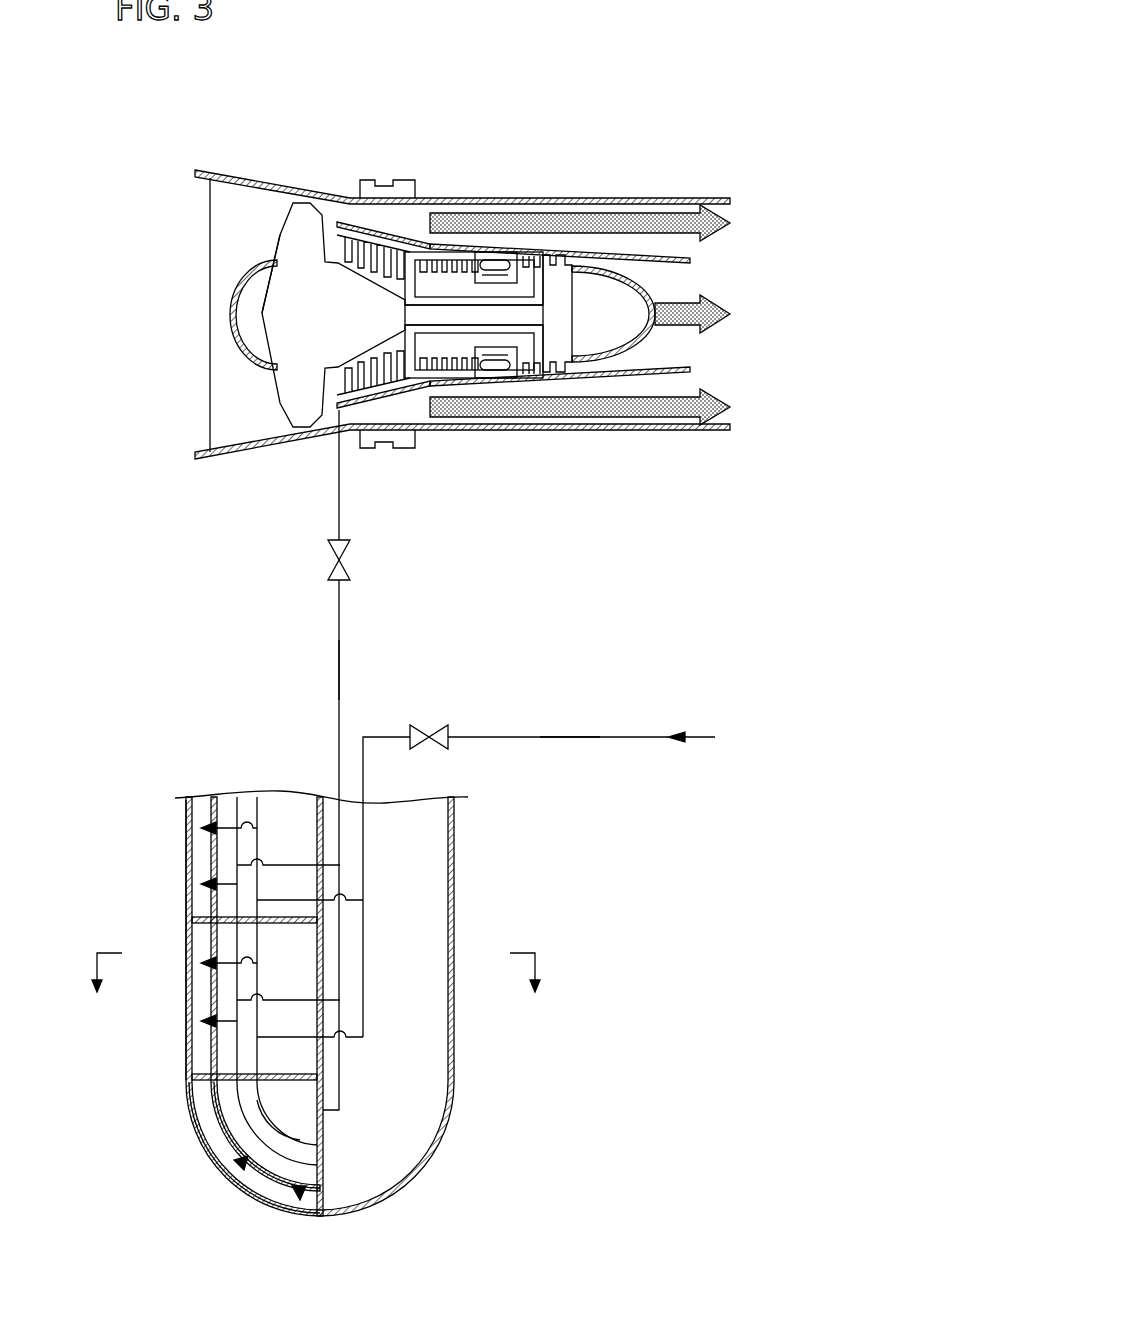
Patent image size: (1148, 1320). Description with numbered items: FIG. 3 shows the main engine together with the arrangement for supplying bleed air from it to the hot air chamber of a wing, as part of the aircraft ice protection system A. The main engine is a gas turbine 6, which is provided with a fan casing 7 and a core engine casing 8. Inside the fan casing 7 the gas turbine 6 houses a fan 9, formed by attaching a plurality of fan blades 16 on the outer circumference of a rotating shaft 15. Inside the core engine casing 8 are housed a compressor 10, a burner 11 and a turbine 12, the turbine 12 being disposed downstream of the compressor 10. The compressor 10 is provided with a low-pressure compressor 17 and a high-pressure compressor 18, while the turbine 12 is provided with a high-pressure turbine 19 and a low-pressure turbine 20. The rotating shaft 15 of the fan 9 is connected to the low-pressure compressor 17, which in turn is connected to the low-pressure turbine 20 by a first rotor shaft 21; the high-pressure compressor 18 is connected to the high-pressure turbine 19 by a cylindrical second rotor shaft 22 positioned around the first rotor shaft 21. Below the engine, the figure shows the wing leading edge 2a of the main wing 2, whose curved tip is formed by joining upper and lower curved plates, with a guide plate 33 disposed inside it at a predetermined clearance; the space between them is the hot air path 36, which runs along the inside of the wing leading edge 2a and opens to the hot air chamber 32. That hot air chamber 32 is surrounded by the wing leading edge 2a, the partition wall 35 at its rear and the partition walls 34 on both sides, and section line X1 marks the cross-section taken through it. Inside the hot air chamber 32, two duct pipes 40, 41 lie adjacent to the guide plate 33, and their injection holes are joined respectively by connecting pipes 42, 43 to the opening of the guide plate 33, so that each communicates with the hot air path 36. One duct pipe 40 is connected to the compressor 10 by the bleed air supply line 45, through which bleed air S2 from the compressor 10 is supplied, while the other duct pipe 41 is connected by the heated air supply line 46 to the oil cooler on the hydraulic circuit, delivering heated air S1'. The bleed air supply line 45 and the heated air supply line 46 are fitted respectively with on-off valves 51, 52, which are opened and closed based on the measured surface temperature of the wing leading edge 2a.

The gas turbine 6 is at (616, 108).
The fan casing 7 is at (240, 177).
The rotating shaft 15 is at (282, 315).
The fan blades 16 is at (302, 206).
The fan 9 is at (268, 398).
The compressor 10 is at (393, 225).
The low-pressure compressor 17 is at (357, 327).
The core engine casing 8 is at (618, 249).
The turbine 12 is at (580, 392).
The burner 11 is at (494, 230).
The second rotor shaft 22 is at (503, 292).
The high-pressure compressor 18 is at (447, 348).
The high-pressure turbine 19 is at (520, 353).
The first rotor shaft 21 is at (490, 316).
The low-pressure turbine 20 is at (555, 350).
The aircraft ice protection system A is at (622, 566).
The bleed air supply line 45 is at (340, 608).
The on-off valve 51 is at (350, 563).
The bleed air S2 is at (340, 664).
The heated air supply line 46 is at (493, 736).
The on-off valve 52 is at (425, 736).
The heated air S1' is at (580, 704).
The main wing 2 is at (450, 1128).
The wing leading edge 2a is at (175, 1060).
The connecting pipe 42 is at (228, 1020).
The hot air path 36 is at (205, 1108).
The guide plate 33 is at (225, 1142).
The partition wall 35 is at (327, 945).
The partition wall 34 is at (290, 1072).
The duct pipe 40 is at (240, 798).
The duct pipe 41 is at (265, 798).
The connecting pipe 43 is at (262, 823).
The hot air chamber 32 is at (303, 1133).
The section line X1 is at (320, 987).